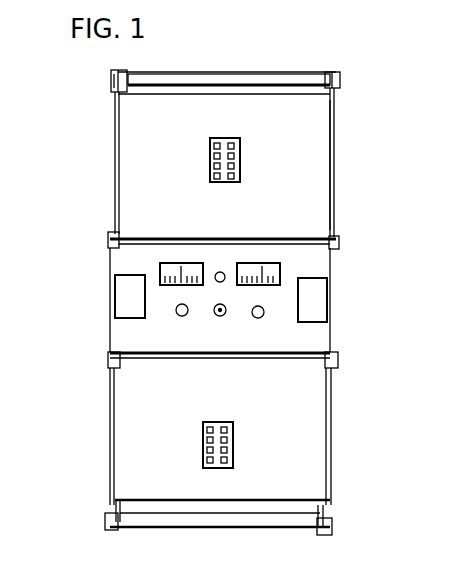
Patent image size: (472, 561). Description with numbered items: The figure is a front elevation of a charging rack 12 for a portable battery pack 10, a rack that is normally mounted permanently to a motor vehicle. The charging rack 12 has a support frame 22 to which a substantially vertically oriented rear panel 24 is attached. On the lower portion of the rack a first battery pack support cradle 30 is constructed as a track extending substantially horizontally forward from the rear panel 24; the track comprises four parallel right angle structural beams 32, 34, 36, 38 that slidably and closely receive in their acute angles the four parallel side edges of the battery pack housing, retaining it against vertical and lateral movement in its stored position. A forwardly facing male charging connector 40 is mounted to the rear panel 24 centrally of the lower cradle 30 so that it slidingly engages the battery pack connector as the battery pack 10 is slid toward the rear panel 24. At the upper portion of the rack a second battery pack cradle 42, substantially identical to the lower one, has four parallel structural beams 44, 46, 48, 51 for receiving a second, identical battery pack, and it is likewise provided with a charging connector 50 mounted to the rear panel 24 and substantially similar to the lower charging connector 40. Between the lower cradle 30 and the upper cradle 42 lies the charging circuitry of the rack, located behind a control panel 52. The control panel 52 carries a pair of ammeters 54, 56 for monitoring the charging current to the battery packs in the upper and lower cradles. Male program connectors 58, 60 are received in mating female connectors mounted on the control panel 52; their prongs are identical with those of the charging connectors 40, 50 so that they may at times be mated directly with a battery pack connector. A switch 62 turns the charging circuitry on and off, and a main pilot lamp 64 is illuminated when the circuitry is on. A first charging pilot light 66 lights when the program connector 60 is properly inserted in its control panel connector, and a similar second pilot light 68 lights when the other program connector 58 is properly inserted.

The portable battery pack 10 is at (310, 441).
The charging rack 12 is at (248, 66).
The support frame 22 is at (200, 80).
The rear panel 24 is at (305, 158).
The first battery pack support cradle 30 is at (296, 418).
The structural beam 32 is at (333, 529).
The structural beam 34 is at (106, 521).
The structural beam 36 is at (108, 360).
The structural beam 38 is at (338, 366).
The charging connector 40 is at (206, 443).
The second battery pack cradle 42 is at (342, 116).
The structural beam 44 is at (338, 240).
The structural beam 46 is at (110, 233).
The structural beam 48 is at (112, 73).
The charging connector 50 is at (210, 150).
The structural beam 51 is at (330, 72).
The control panel 52 is at (313, 261).
The ammeter 54 is at (163, 270).
The ammeter 56 is at (272, 268).
The male program connector 58 is at (316, 304).
The male program connector 60 is at (125, 290).
The switch 62 is at (216, 316).
The main pilot lamp 64 is at (222, 272).
The first charging pilot light 66 is at (178, 314).
The second pilot light 68 is at (264, 314).